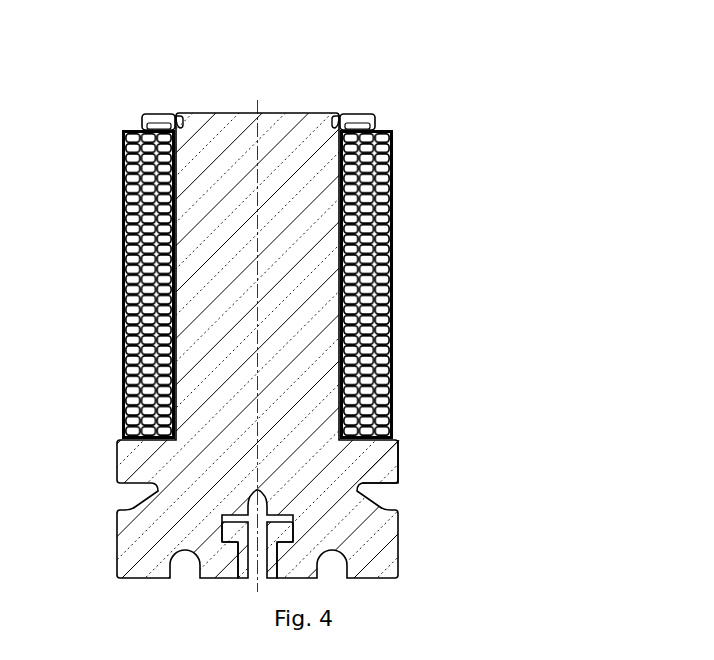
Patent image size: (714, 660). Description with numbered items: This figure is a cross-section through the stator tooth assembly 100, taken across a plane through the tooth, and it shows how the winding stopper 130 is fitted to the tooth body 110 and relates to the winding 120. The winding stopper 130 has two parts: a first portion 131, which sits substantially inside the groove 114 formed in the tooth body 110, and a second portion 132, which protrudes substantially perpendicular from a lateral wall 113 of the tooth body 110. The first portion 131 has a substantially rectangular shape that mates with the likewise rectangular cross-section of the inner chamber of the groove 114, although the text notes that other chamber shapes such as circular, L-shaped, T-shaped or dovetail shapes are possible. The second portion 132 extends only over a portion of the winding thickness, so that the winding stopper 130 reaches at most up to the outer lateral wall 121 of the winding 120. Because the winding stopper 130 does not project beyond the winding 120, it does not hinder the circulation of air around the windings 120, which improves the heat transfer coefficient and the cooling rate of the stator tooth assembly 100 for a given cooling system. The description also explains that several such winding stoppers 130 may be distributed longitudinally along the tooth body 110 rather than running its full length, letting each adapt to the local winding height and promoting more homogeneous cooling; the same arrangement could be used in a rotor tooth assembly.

The stator tooth assembly 100 is at (515, 73).
The tooth body 110 is at (114, 459).
The lateral wall 113 is at (400, 456).
The groove 114 is at (188, 119).
The winding 120 is at (393, 208).
The outer lateral wall 121 is at (395, 162).
The winding stopper 130 is at (386, 122).
The first portion 131 is at (338, 116).
The second portion 132 is at (363, 115).